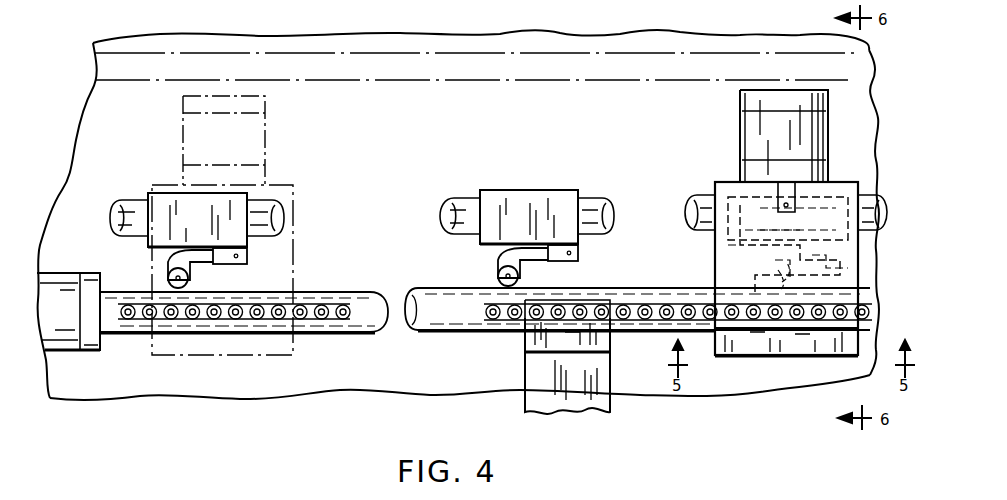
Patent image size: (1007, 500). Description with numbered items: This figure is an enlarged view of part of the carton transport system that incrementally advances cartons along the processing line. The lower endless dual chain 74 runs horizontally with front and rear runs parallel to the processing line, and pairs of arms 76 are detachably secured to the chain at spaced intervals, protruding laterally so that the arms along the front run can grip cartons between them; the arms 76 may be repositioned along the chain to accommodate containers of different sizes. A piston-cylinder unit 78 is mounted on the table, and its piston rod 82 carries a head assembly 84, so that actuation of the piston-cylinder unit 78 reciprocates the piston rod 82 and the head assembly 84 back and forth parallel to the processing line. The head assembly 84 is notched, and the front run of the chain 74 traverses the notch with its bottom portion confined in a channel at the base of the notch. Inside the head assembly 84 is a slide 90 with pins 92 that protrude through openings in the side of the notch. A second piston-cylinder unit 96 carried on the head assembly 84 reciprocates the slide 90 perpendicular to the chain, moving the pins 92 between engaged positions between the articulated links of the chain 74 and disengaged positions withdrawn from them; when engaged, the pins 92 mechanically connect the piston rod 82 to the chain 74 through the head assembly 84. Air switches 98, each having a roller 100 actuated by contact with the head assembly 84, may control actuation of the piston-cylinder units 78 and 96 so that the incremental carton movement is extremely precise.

The lower endless dual chain 74 is at (332, 306).
The arms 76 is at (600, 380).
The piston-cylinder unit 78 is at (88, 348).
The piston rod 82 is at (457, 298).
The head assembly 84 is at (716, 192).
The slide 90 is at (726, 236).
The pins 92 is at (718, 265).
The piston-cylinder unit 96 is at (258, 150).
The air switches 98 is at (240, 198).
The rollers 100 is at (190, 276).